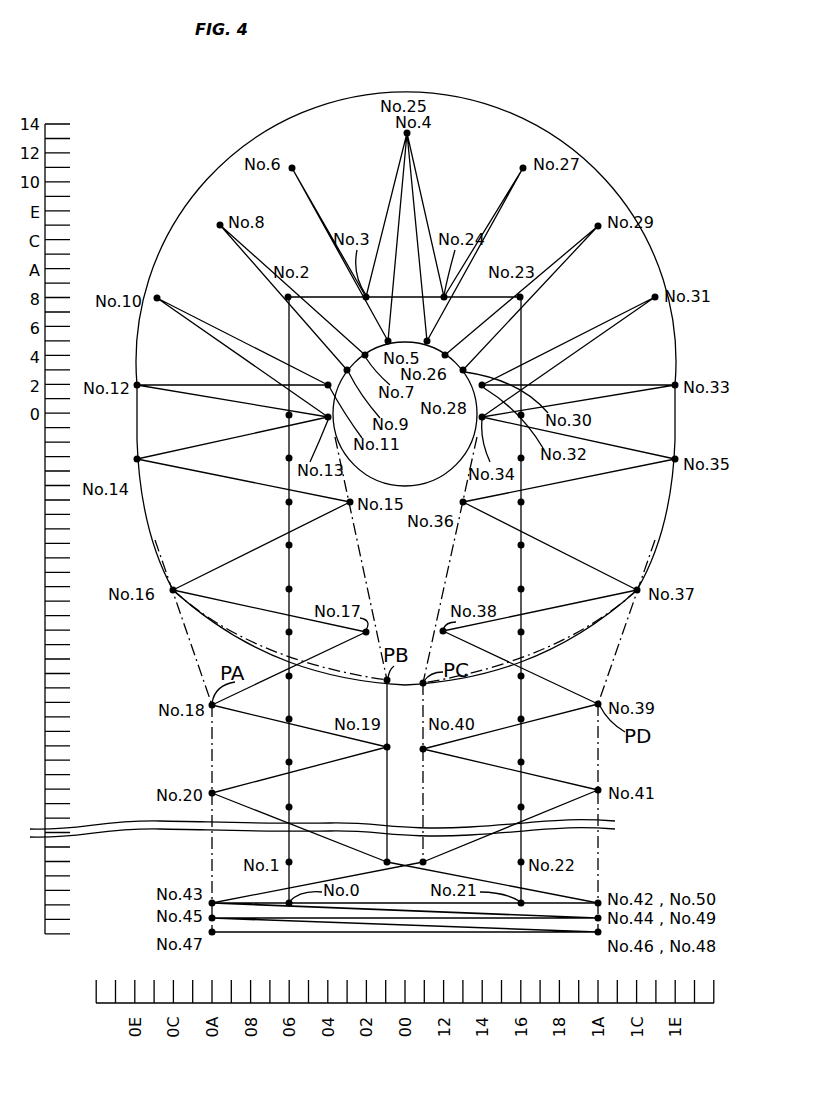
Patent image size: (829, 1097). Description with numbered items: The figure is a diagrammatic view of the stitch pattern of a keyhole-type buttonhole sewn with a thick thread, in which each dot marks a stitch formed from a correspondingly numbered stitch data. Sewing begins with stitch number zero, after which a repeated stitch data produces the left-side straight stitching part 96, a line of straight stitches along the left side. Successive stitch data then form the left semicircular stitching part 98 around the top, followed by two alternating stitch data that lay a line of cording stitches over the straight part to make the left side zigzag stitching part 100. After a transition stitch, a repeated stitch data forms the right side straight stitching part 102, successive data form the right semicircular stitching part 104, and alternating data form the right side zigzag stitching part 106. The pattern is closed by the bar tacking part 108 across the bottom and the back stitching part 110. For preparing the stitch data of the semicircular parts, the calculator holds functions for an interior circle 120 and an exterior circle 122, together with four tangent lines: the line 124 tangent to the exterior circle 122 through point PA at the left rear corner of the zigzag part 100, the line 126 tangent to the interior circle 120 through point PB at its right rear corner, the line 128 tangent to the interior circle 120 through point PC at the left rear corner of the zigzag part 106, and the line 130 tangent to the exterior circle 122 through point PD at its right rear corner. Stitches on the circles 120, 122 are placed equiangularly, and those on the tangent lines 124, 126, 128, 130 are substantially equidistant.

The left-side straight stitching part 96 is at (283, 512).
The left semicircular stitching part 98 is at (170, 262).
The left side zigzag stitching part 100 is at (210, 766).
The right side straight stitching part 102 is at (530, 513).
The right semicircular stitching part 104 is at (645, 262).
The right side zigzag stitching part 106 is at (602, 762).
The bar tacking part 108 is at (332, 942).
The back stitching part 110 is at (595, 942).
The interior circle 120 is at (402, 486).
The exterior circle 122 is at (460, 136).
The tangent line 124 is at (192, 650).
The tangent line 126 is at (353, 590).
The tangent line 128 is at (440, 586).
The tangent line 130 is at (628, 638).